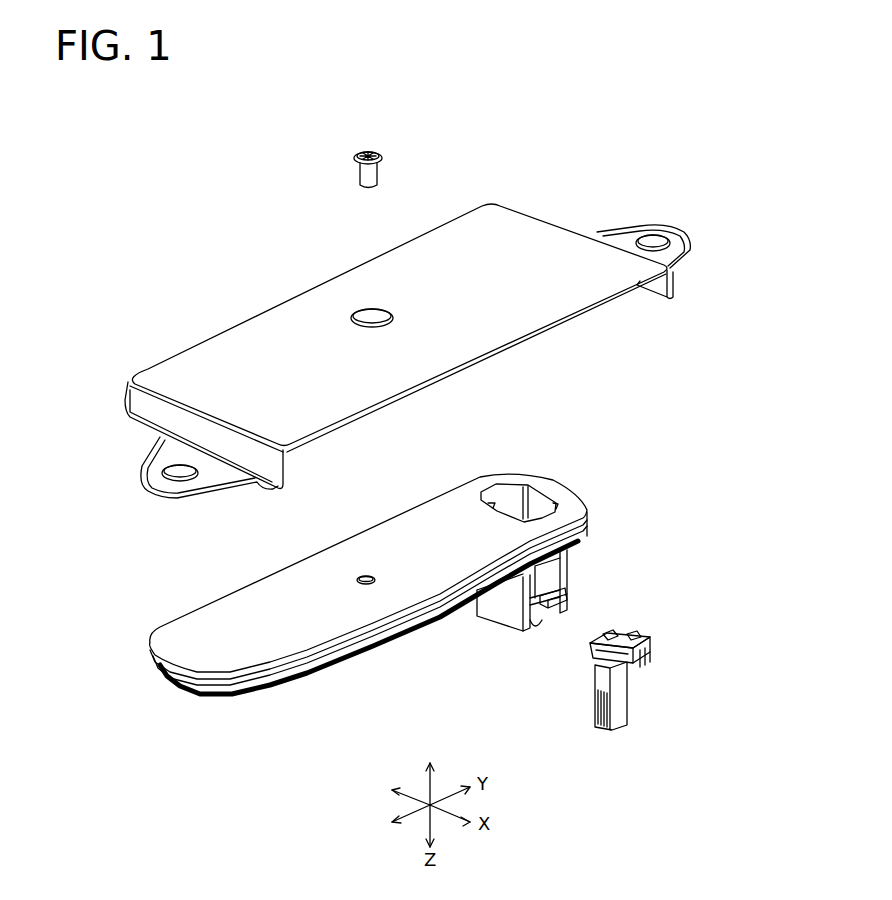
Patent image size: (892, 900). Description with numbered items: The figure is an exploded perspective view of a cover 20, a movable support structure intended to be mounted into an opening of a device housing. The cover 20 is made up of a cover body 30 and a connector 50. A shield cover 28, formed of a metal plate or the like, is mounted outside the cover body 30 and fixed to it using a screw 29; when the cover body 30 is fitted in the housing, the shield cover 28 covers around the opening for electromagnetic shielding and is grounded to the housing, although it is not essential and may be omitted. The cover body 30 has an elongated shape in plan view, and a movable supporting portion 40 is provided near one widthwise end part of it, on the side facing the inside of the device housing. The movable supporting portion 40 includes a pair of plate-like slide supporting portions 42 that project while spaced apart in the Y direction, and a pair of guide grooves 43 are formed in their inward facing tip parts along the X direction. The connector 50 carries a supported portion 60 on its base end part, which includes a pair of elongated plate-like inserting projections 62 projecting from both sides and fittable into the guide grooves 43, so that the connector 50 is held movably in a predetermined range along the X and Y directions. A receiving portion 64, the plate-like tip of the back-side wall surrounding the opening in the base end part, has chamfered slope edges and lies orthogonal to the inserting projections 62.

The cover 20 is at (612, 531).
The shield cover 28 is at (566, 212).
The screw 29 is at (384, 151).
The cover body 30 is at (350, 523).
The movable supporting portion 40 is at (535, 606).
The slide supporting portions 42 is at (570, 590).
The guide grooves 43 is at (568, 606).
The connector 50 is at (631, 665).
The supported portion 60 is at (592, 651).
The inserting projections 62 is at (646, 639).
The receiving portion 64 is at (606, 636).